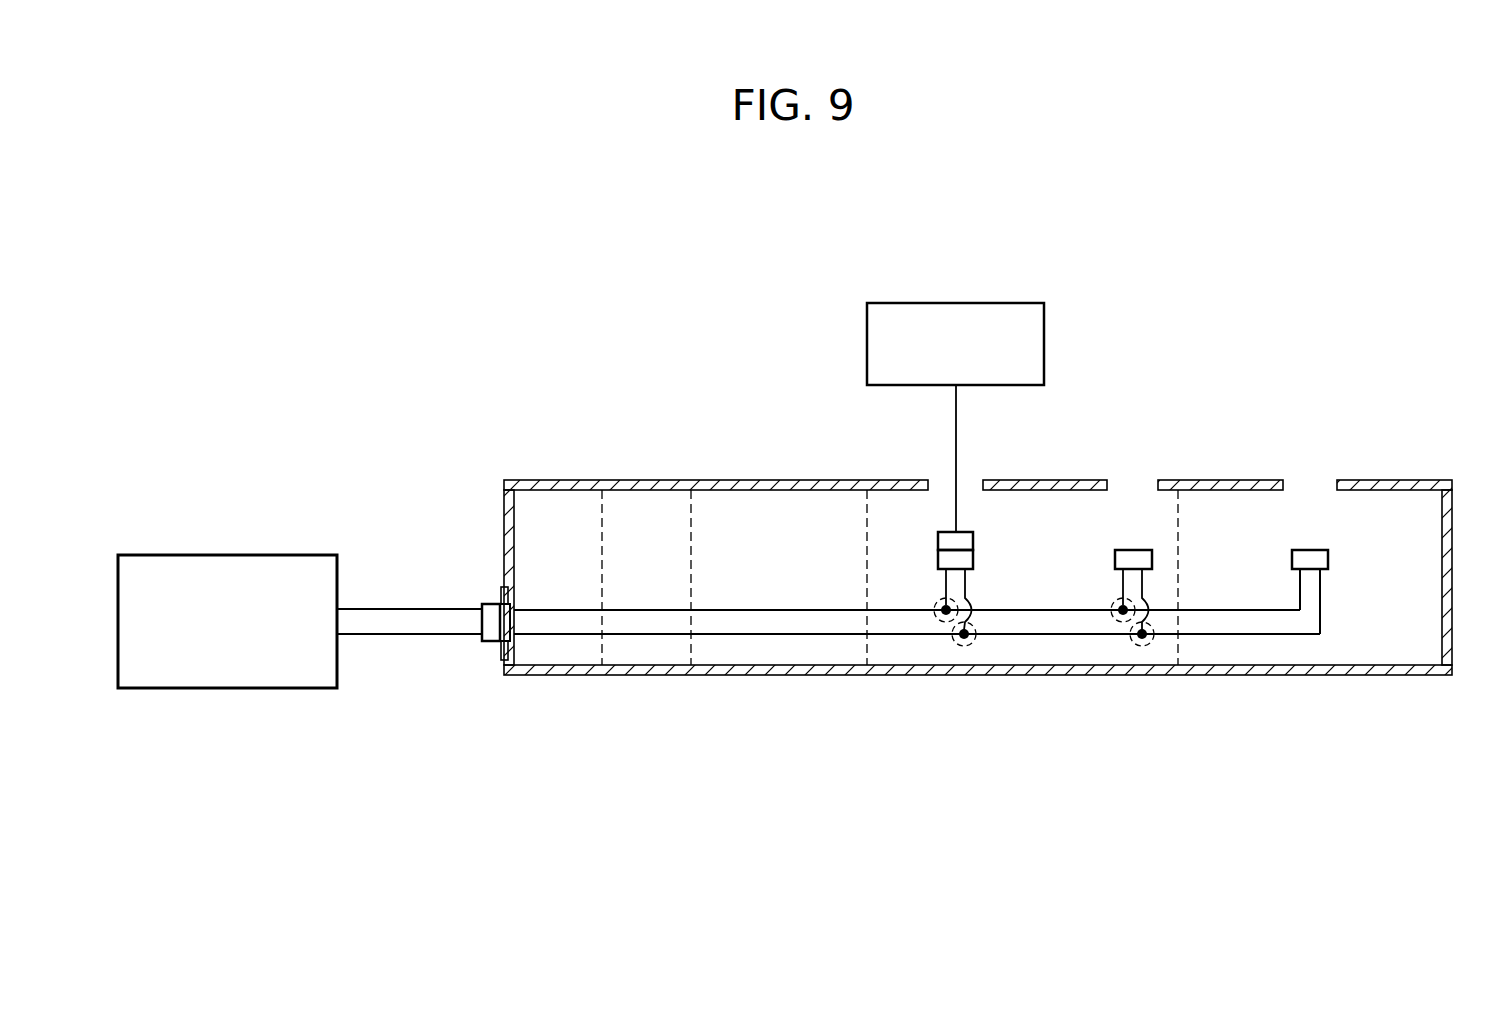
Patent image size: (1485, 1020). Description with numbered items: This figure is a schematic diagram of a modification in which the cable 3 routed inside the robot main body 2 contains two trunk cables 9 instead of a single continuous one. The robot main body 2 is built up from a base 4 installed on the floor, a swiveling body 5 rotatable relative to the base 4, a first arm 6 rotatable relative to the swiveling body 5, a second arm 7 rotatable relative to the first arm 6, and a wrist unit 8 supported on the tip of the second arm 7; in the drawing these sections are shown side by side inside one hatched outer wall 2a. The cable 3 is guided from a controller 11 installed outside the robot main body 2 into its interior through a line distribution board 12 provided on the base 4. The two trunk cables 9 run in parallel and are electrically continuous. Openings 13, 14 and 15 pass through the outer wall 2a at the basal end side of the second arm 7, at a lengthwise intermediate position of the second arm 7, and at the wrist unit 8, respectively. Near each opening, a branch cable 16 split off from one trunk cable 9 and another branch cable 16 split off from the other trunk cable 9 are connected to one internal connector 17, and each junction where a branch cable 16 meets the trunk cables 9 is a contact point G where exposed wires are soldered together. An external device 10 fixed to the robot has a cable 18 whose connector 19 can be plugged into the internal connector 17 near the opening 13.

The robot main body 2 is at (978, 518).
The outer wall 2a is at (760, 480).
The cable 3 is at (900, 655).
The base 4 is at (567, 676).
The swiveling body 5 is at (652, 676).
The first arm 6 is at (772, 676).
The second arm 7 is at (1010, 676).
The wrist unit 8 is at (1300, 692).
The trunk cable 9 is at (830, 636).
The external device 10 is at (954, 303).
The controller 11 is at (213, 555).
The line distribution board 12 is at (500, 603).
The opening 13 is at (983, 486).
The opening 14 is at (1160, 487).
The opening 15 is at (1338, 487).
The branch cable 16 is at (946, 590).
The internal connector 17 is at (973, 560).
The cable 18 is at (956, 428).
The connector 19 is at (973, 540).
The contact point G is at (936, 605).